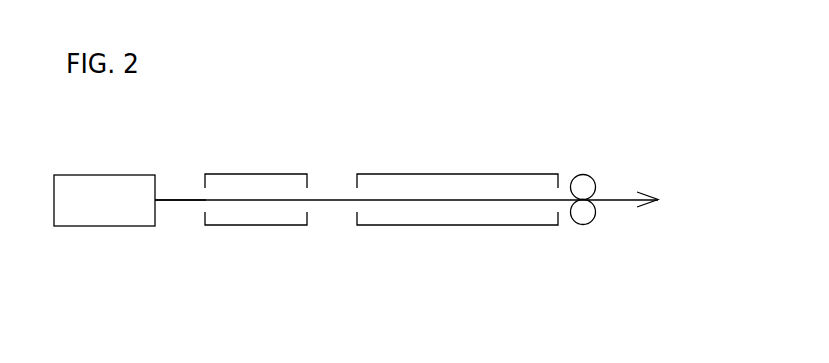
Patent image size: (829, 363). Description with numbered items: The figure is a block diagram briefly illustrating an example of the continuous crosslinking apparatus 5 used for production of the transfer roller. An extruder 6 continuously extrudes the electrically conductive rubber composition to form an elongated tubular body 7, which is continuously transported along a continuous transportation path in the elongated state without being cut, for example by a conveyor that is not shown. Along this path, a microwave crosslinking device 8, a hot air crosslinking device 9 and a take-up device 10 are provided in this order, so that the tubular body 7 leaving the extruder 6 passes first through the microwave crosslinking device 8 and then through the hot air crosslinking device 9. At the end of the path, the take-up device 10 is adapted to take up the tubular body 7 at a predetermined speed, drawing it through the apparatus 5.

The continuous crosslinking apparatus 5 is at (398, 90).
The extruder 6 is at (113, 217).
The tubular body 7 is at (180, 199).
The microwave crosslinking device 8 is at (257, 225).
The hot air crosslinking device 9 is at (442, 225).
The take-up device 10 is at (583, 179).